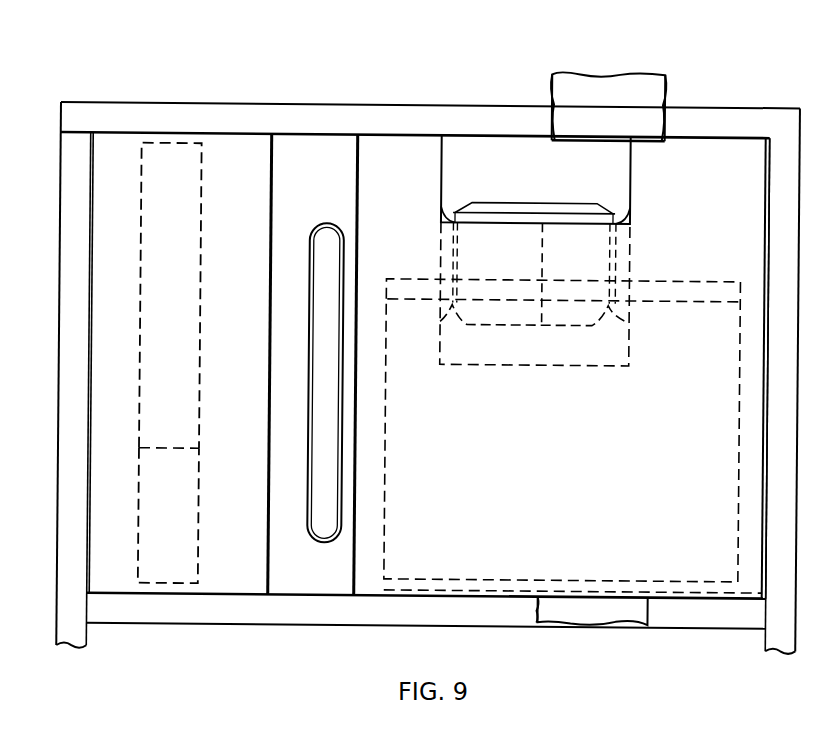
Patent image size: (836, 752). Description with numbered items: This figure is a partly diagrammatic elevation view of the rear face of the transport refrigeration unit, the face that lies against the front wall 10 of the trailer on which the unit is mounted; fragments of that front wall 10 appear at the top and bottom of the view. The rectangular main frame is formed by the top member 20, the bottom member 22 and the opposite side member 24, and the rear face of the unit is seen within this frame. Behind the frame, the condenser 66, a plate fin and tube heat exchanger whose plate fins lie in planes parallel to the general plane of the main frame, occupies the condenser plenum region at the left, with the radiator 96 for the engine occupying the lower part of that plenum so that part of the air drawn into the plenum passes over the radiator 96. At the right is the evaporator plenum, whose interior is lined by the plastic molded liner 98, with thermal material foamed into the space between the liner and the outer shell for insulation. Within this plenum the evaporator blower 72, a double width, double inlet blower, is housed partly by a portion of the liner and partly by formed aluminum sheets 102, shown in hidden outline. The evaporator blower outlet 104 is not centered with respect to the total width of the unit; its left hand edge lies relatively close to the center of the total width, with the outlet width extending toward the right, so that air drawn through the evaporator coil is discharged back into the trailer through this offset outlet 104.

The front wall 10 is at (562, 93).
The top member 20 is at (727, 117).
The bottom member 22 is at (462, 618).
The side member 24 is at (795, 155).
The condenser 66 is at (140, 192).
The evaporator blower 72 is at (526, 242).
The radiator 96 is at (137, 545).
The plastic molded liner 98 is at (767, 234).
The formed aluminum sheets 102 is at (630, 339).
The evaporator blower outlet 104 is at (620, 183).